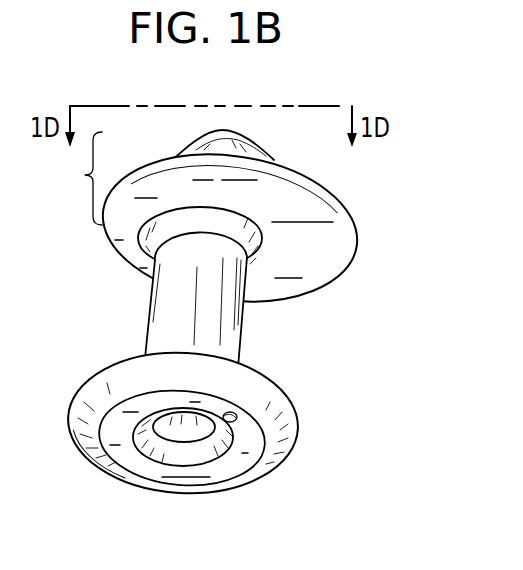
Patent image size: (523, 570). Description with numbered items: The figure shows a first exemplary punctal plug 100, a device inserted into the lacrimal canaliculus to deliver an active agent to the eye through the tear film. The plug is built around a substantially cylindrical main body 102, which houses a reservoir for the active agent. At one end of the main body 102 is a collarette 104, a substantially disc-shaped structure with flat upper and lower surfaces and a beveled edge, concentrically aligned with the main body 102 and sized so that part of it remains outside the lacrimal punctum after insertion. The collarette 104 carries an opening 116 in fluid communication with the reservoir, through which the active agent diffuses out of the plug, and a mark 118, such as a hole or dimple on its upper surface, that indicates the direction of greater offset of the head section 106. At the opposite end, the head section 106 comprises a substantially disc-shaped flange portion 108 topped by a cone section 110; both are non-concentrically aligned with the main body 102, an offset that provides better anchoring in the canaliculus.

The punctal plug 100 is at (72, 276).
The main body 102 is at (150, 302).
The collarette 104 is at (78, 398).
The head section 106 is at (84, 175).
The flange portion 108 is at (359, 236).
The cone section 110 is at (252, 142).
The opening 116 is at (180, 431).
The mark 118 is at (240, 414).